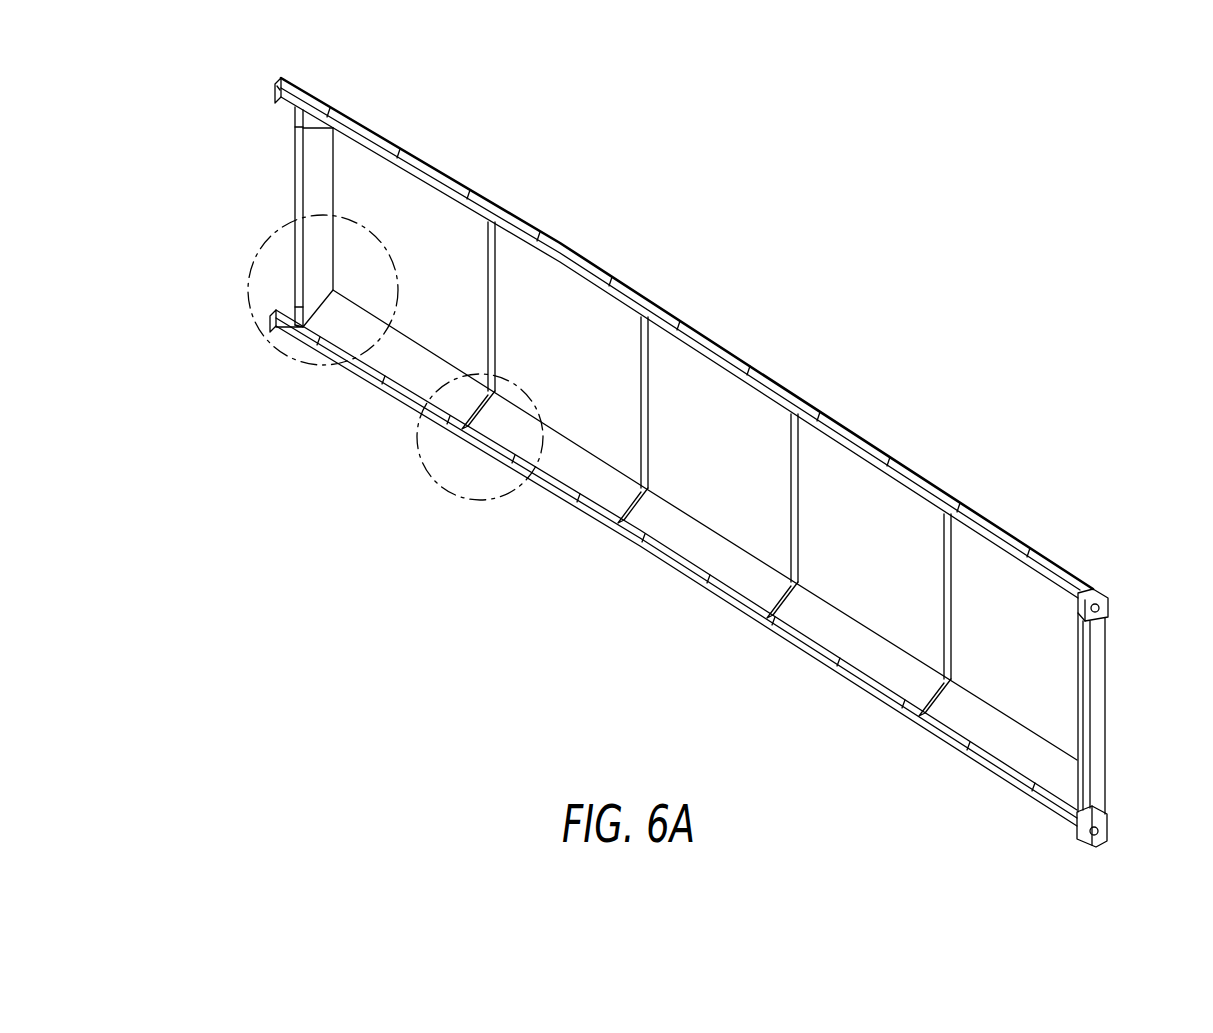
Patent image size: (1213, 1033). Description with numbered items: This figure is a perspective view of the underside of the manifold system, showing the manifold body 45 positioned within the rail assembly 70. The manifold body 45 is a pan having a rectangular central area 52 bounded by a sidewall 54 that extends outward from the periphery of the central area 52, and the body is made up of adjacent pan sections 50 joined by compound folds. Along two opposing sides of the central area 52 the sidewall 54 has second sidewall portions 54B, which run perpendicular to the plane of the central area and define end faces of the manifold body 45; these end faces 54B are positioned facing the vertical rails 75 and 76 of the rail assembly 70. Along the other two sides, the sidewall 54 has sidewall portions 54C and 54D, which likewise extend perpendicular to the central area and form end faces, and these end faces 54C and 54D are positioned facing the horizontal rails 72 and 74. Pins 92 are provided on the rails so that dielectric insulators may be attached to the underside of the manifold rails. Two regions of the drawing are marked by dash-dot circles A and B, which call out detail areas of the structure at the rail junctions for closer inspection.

The manifold body 45 is at (386, 54).
The pan section 50 is at (531, 273).
The central area 52 is at (733, 400).
The sidewall 54 is at (588, 487).
The second sidewall portion 54B is at (892, 466).
The sidewall portion 54C is at (318, 186).
The sidewall portion 54D is at (1100, 727).
The rail assembly 70 is at (298, 203).
The horizontal rail 72 is at (1088, 683).
The horizontal rail 74 is at (293, 188).
The vertical rail 75 is at (548, 500).
The vertical rail 76 is at (826, 420).
The pin 92 is at (1040, 812).
The detail circle A is at (420, 456).
The detail circle B is at (252, 319).